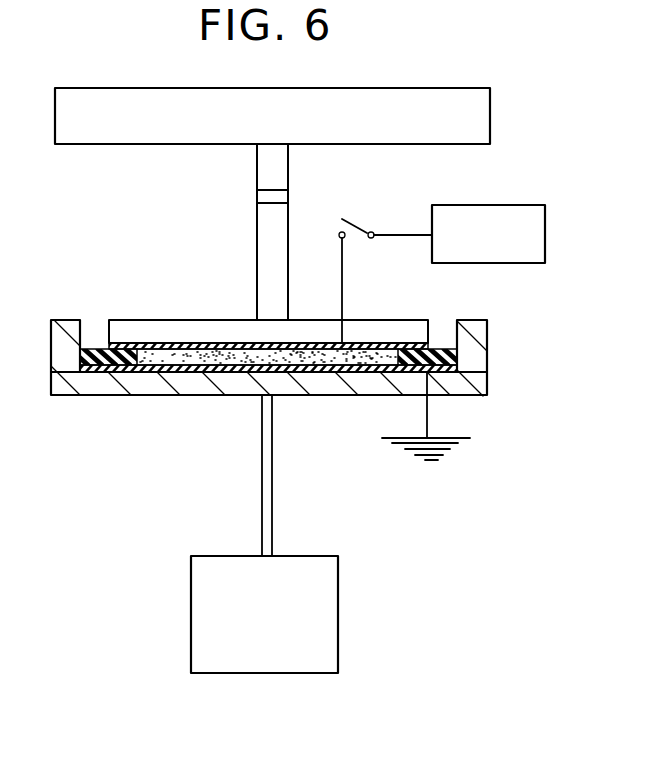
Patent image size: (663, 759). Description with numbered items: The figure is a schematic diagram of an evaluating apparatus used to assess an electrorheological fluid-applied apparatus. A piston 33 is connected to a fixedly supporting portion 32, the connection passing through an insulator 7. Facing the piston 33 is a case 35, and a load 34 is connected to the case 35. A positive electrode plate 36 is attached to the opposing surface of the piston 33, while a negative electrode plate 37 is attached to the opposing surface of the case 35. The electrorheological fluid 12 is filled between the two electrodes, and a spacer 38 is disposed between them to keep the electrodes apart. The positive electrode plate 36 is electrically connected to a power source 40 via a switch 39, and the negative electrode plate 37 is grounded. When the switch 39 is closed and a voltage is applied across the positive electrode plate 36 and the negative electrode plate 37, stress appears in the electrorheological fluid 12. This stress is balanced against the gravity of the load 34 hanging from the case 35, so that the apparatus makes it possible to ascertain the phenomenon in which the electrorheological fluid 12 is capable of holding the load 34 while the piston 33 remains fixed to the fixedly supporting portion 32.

The fixedly supporting portion 32 is at (482, 126).
The insulator 7 is at (256, 199).
The power source 40 is at (468, 248).
The switch 39 is at (372, 236).
The case 35 is at (54, 340).
The negative electrode plate 37 is at (156, 345).
The piston 33 is at (185, 331).
The positive electrode plate 36 is at (234, 352).
The spacer 38 is at (113, 372).
The electrorheological fluid 12 is at (198, 380).
The load 34 is at (322, 616).